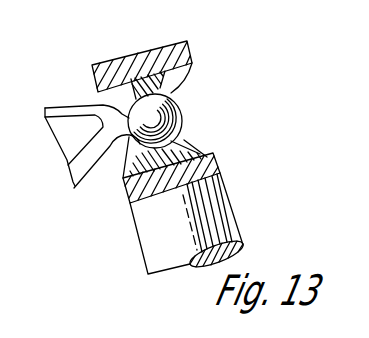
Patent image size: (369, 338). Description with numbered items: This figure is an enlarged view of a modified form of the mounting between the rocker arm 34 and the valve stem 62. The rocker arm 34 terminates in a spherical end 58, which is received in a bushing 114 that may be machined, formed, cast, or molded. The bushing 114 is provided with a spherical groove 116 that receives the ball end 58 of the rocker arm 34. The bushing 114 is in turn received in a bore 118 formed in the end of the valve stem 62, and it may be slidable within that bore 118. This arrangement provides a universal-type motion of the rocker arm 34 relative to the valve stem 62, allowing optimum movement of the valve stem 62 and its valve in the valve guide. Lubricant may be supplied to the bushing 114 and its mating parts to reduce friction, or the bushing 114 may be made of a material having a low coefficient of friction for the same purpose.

The rocker arm 34 is at (72, 188).
The spherical end 58 is at (182, 113).
The valve stem 62 is at (232, 213).
The bushing 114 is at (190, 147).
The spherical groove 116 is at (127, 163).
The bore 118 is at (218, 161).